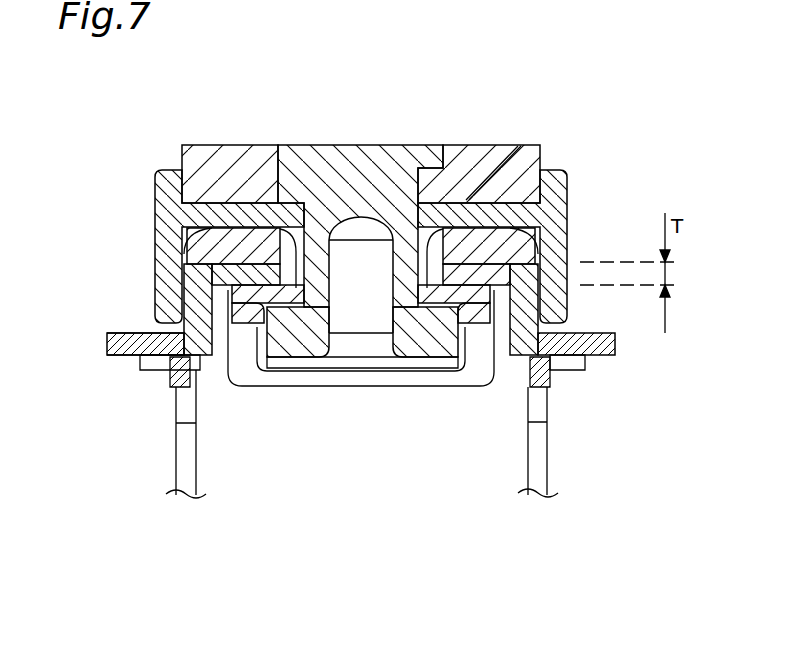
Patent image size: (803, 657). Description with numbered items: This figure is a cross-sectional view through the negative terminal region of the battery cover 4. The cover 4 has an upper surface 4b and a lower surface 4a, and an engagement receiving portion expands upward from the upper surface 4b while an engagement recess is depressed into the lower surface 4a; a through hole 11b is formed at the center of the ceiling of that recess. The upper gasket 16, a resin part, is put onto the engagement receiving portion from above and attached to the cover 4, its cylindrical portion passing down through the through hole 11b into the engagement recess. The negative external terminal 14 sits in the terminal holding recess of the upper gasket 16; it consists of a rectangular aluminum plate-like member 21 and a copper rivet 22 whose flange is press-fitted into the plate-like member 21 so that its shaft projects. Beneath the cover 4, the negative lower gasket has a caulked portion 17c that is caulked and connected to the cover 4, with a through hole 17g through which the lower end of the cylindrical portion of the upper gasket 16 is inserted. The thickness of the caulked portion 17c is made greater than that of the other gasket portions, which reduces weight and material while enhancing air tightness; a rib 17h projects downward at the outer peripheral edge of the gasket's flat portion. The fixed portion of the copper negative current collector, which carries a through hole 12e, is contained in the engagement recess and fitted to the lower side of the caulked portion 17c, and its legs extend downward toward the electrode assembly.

The negative external terminal 14 is at (361, 121).
The rivet 22 is at (420, 145).
The plate-like member 21 is at (479, 143).
The through hole 17g is at (512, 146).
The upper gasket 16 is at (568, 178).
The through hole 11b is at (288, 250).
The caulked portion 17c is at (488, 275).
The cover 4 is at (116, 334).
The upper surface 4b is at (142, 334).
The lower surface 4a is at (122, 357).
The through hole 12e is at (425, 297).
The rib 17h is at (560, 380).